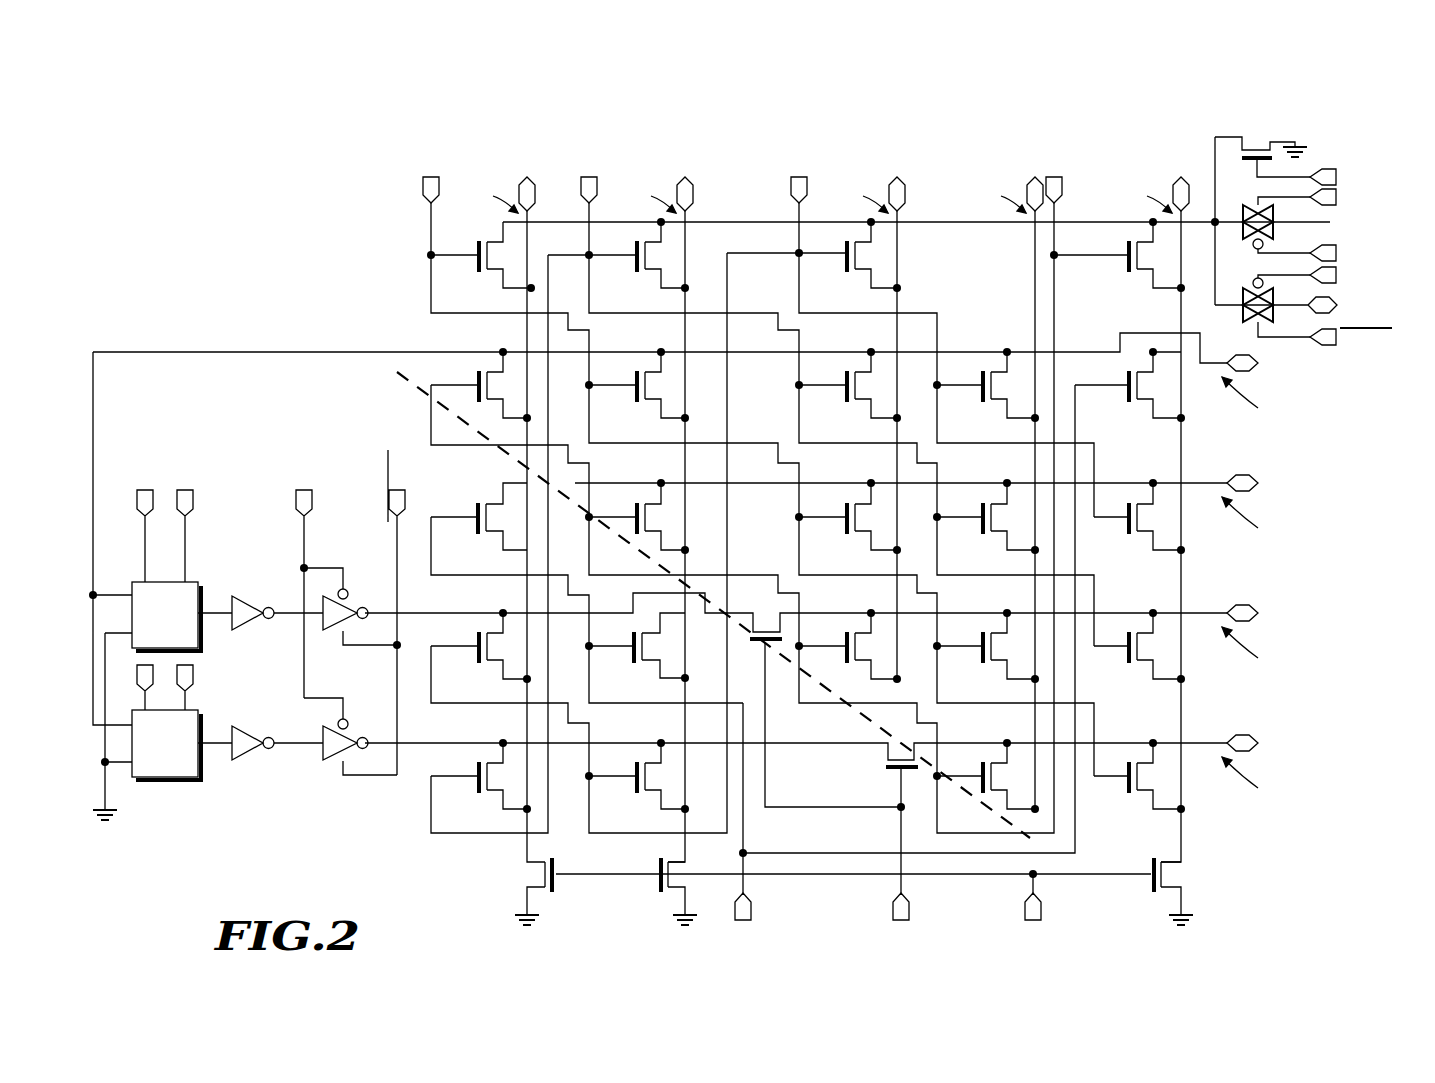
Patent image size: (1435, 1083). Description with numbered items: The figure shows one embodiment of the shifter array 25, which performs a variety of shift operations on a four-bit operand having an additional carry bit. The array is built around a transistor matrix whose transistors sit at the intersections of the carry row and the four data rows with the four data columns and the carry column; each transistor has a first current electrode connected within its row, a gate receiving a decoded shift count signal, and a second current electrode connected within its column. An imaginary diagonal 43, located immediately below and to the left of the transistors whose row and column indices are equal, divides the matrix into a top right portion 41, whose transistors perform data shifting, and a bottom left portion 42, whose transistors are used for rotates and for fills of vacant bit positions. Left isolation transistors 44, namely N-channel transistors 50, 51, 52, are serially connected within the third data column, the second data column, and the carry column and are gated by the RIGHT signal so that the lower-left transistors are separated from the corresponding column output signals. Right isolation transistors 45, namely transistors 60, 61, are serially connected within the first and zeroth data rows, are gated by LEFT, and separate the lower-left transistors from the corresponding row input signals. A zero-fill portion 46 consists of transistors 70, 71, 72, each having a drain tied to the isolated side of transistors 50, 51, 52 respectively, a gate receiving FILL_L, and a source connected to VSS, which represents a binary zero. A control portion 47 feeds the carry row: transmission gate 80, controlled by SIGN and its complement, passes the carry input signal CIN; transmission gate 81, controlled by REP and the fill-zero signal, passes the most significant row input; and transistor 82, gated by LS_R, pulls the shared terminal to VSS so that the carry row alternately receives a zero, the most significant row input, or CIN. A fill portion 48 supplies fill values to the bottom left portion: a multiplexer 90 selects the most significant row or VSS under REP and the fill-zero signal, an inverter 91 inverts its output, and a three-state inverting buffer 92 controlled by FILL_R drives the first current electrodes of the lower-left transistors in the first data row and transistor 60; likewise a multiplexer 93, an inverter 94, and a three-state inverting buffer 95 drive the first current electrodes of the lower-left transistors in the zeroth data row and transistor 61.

The shifter array 25 is at (291, 893).
The top right portion 41 is at (1200, 592).
The bottom left portion 42 is at (388, 814).
The diagonal 43 is at (420, 386).
The left isolation transistors 44 is at (460, 477).
The right isolation transistors 45 is at (848, 926).
The zero-fill portion 46 is at (442, 872).
The control portion 47 is at (1258, 130).
The fill portion 48 is at (215, 818).
The transistor 50 is at (479, 531).
The transistor 51 is at (637, 664).
The transistor 52 is at (1129, 400).
The transistor 60 is at (752, 644).
The transistor 61 is at (888, 772).
The transistor 70 is at (552, 892).
The transistor 71 is at (661, 892).
The transistor 72 is at (1154, 892).
The transmission gate 80 is at (1243, 318).
The transmission gate 81 is at (1248, 241).
The transistor 82 is at (1250, 162).
The multiplexer 90 is at (197, 583).
The inverter 91 is at (244, 601).
The three-state inverting buffer 92 is at (333, 640).
The multiplexer 93 is at (170, 779).
The inverter 94 is at (247, 731).
The three-state inverting buffer 95 is at (330, 768).